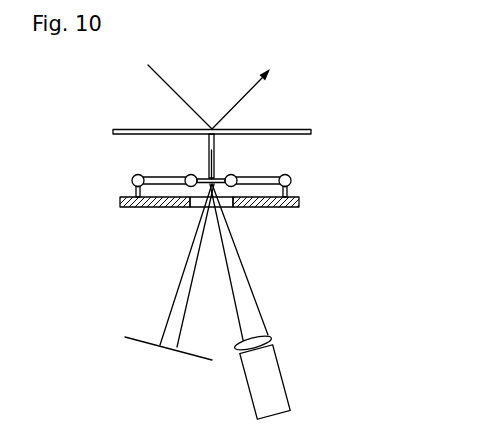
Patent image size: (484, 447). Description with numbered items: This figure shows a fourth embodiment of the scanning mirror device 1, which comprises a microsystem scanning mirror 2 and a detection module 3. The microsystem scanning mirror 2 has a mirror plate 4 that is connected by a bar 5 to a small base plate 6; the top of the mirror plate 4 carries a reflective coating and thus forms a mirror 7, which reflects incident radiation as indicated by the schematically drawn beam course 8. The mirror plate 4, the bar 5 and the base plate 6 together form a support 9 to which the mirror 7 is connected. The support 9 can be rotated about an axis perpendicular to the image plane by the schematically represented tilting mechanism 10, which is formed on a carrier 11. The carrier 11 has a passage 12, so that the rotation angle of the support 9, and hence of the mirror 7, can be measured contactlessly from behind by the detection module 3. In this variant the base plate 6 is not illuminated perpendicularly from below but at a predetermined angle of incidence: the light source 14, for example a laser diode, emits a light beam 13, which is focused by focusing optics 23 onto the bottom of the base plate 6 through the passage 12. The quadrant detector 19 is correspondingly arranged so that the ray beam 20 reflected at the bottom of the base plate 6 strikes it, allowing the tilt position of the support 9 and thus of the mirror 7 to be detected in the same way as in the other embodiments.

The scanning mirror device 1 is at (307, 99).
The microsystem scanning mirror 2 is at (98, 156).
The detection module 3 is at (293, 298).
The mirror plate 4 is at (207, 118).
The bar 5 is at (208, 165).
The base plate 6 is at (222, 178).
The mirror 7 is at (125, 128).
The beam course 8 is at (169, 86).
The support 9 is at (227, 153).
The tilting mechanism 10 is at (147, 176).
The carrier 11 is at (300, 200).
The passage 12 is at (180, 208).
The light beam 13 is at (238, 263).
The light source 14 is at (285, 380).
The quadrant detector 19 is at (160, 352).
The reflected ray beam 20 is at (181, 277).
The focusing optics 23 is at (272, 340).